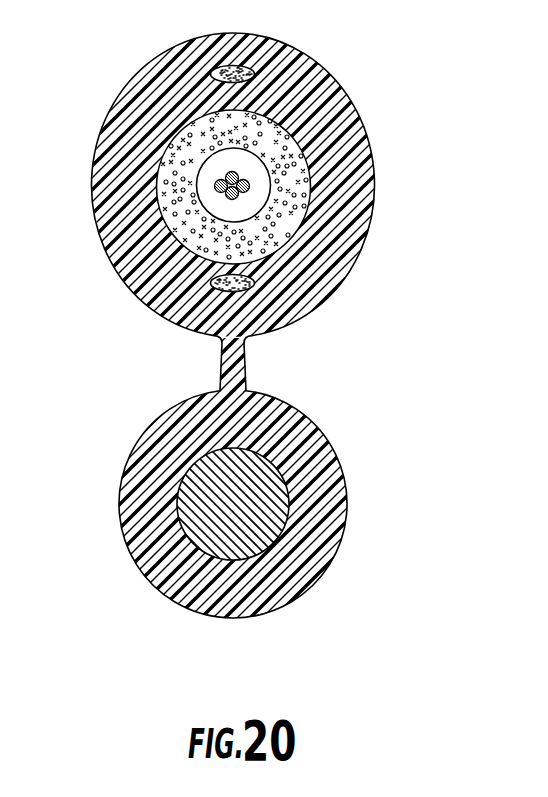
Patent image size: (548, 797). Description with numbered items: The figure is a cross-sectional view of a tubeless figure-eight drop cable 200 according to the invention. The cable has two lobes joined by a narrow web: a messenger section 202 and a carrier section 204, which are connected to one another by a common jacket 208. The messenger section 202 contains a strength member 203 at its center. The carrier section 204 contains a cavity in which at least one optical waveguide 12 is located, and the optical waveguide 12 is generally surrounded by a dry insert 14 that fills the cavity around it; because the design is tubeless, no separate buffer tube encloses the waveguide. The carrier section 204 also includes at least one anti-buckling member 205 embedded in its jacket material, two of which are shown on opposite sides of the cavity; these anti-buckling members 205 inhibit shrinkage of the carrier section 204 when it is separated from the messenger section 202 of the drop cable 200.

The optical waveguide 12 is at (222, 188).
The dry insert 14 is at (287, 158).
The tubeless figure-eight drop cable 200 is at (274, 398).
The messenger section 202 is at (274, 398).
The strength member 203 is at (265, 533).
The carrier section 204 is at (274, 398).
The anti-buckling member 205 is at (255, 74).
The common jacket 208 is at (325, 460).